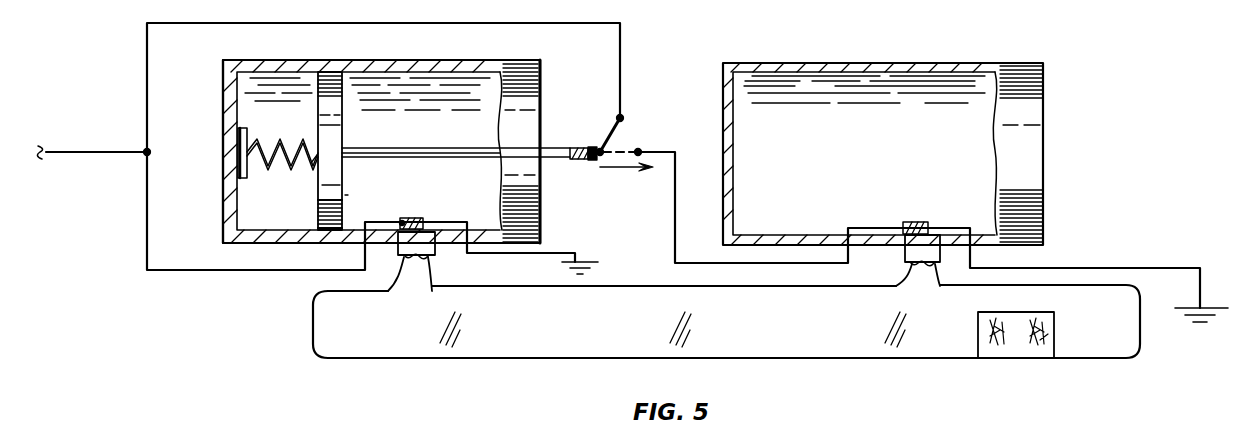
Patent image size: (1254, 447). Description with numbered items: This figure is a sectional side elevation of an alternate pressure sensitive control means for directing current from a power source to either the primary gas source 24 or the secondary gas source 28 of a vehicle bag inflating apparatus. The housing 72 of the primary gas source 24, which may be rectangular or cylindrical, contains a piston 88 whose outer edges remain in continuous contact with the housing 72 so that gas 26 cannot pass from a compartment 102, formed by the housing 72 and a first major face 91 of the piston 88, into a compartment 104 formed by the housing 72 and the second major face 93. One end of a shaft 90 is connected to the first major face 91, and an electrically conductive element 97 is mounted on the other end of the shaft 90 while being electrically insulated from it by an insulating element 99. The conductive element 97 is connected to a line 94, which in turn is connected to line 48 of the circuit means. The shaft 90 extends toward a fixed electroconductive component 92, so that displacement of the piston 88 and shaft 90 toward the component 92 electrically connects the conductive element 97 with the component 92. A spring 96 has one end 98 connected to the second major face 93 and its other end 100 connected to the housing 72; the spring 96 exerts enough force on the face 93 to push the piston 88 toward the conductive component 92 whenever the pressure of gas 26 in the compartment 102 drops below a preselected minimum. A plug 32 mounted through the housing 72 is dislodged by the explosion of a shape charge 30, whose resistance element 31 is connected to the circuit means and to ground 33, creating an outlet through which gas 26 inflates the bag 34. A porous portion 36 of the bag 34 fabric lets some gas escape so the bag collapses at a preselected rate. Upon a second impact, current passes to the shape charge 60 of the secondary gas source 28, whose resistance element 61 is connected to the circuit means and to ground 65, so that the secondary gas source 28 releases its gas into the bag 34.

The primary gas source 24 is at (237, 62).
The gas 26 is at (410, 107).
The secondary gas source 28 is at (745, 63).
The shape charge 30 is at (414, 223).
The resistance element 31 is at (411, 218).
The plug 32 is at (428, 247).
The ground 33 is at (587, 261).
The inflatable bag 34 is at (495, 358).
The porous portion 36 is at (1015, 345).
The line 48 is at (72, 153).
The shape charge 60 is at (930, 205).
The resistance element 61 is at (912, 223).
The ground 65 is at (1195, 322).
The housing 72 is at (228, 208).
The piston 88 is at (330, 133).
The shaft 90 is at (440, 157).
The first major face 91 is at (342, 192).
The electroconductive component 92 is at (638, 150).
The second major face 93 is at (318, 211).
The line 94 is at (618, 122).
The spring 96 is at (257, 146).
The electrically conductive element 97 is at (596, 161).
The end of spring 98 is at (311, 161).
The insulating element 99 is at (580, 160).
The end of spring 100 is at (238, 160).
The compartment 102 is at (452, 100).
The compartment 104 is at (250, 103).